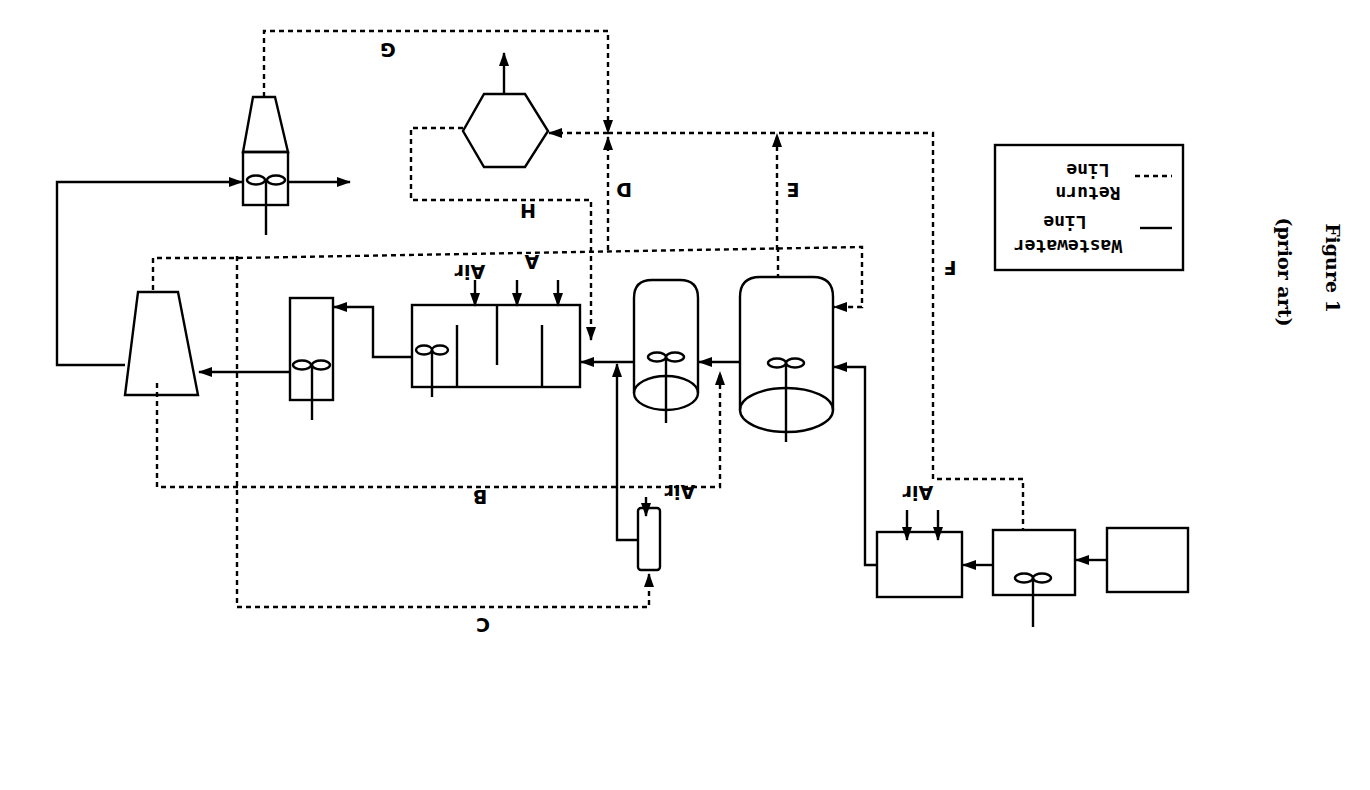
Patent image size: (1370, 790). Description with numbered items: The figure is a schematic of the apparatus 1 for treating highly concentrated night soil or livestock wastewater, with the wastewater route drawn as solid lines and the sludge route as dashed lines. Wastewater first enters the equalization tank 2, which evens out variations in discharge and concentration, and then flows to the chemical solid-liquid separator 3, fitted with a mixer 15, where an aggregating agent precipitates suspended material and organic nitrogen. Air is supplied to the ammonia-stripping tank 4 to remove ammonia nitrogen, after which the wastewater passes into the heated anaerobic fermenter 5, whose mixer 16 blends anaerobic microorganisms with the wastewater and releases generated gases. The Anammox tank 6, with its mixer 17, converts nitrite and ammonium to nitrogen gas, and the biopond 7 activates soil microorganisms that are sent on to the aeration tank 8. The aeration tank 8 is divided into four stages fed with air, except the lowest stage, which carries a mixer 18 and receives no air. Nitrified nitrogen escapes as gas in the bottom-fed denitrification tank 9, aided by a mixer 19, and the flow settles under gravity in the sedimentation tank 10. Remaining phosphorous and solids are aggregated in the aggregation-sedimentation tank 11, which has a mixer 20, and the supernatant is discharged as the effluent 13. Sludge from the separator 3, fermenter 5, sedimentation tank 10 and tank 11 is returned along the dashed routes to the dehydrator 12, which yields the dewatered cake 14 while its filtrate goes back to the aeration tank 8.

The apparatus for treating wastewater 1 is at (451, 653).
The equalization tank 2 is at (1147, 560).
The chemical solid-liquid separator 3 is at (1034, 562).
The ammonia-stripping tank 4 is at (919, 564).
The anaerobic fermenter 5 is at (786, 354).
The Anammox tank 6 is at (666, 345).
The biopond 7 is at (649, 539).
The aeration tank 8 is at (496, 346).
The denitrification tank 9 is at (311, 349).
The sedimentation tank 10 is at (161, 343).
The aggregation-sedimentation tank 11 is at (265, 151).
The dehydrator 12 is at (505, 130).
The discharged supernatant 13 is at (336, 180).
The dewatered cake 14 is at (479, 66).
The mixer 15 is at (1025, 607).
The mixer 16 is at (769, 413).
The mixer 17 is at (663, 406).
The mixer 18 is at (428, 381).
The mixer 19 is at (307, 414).
The mixer 20 is at (262, 209).